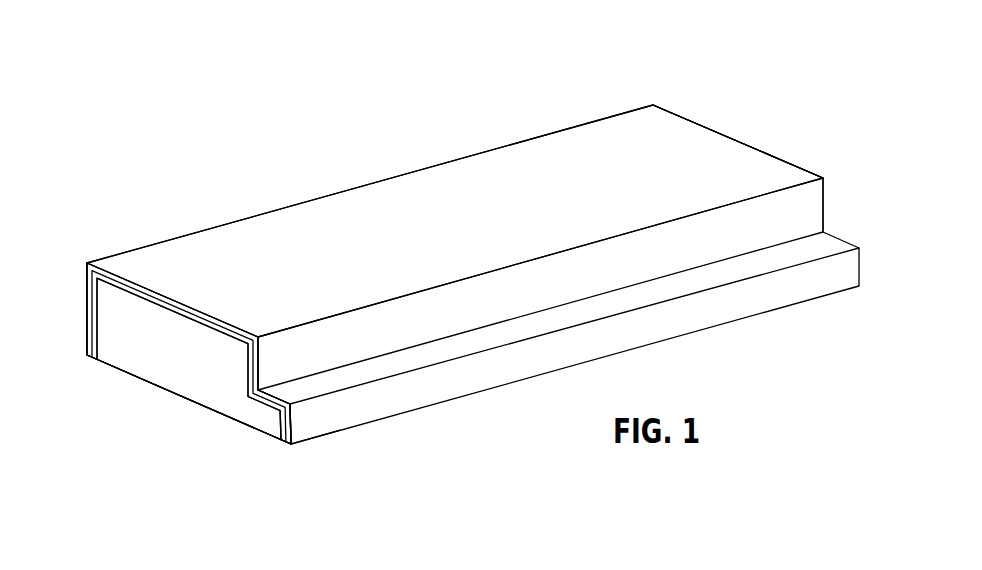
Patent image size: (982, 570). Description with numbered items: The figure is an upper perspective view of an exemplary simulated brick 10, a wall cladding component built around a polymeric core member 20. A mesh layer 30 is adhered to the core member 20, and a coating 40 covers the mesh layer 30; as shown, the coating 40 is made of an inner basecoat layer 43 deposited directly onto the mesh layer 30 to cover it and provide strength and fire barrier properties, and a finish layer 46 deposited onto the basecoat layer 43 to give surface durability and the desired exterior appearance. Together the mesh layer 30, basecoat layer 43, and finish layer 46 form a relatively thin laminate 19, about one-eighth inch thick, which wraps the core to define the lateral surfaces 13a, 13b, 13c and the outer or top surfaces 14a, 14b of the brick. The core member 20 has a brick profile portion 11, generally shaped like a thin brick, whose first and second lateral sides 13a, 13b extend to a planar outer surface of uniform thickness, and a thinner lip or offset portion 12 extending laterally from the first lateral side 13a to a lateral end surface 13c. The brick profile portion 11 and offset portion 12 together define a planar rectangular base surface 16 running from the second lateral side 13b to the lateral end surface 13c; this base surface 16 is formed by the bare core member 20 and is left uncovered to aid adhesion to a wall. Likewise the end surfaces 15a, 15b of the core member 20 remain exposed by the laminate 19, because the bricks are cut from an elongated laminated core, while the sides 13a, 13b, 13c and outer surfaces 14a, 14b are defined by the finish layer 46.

The simulated brick 10 is at (556, 52).
The brick profile portion 11 is at (50, 281).
The offset portion 12 is at (254, 433).
The first lateral side 13a is at (803, 210).
The second lateral side 13b is at (87, 287).
The lateral end surface 13c is at (730, 307).
The outer surface 14a is at (625, 182).
The outer surface 14b is at (827, 250).
The end surface 15a is at (120, 312).
The end surface 15b is at (723, 134).
The base surface 16 is at (197, 403).
The laminate 19 is at (164, 292).
The core member 20 is at (181, 364).
The mesh layer 30 is at (174, 312).
The coating 40 is at (776, 131).
The basecoat layer 43 is at (283, 436).
The finish layer 46 is at (303, 433).